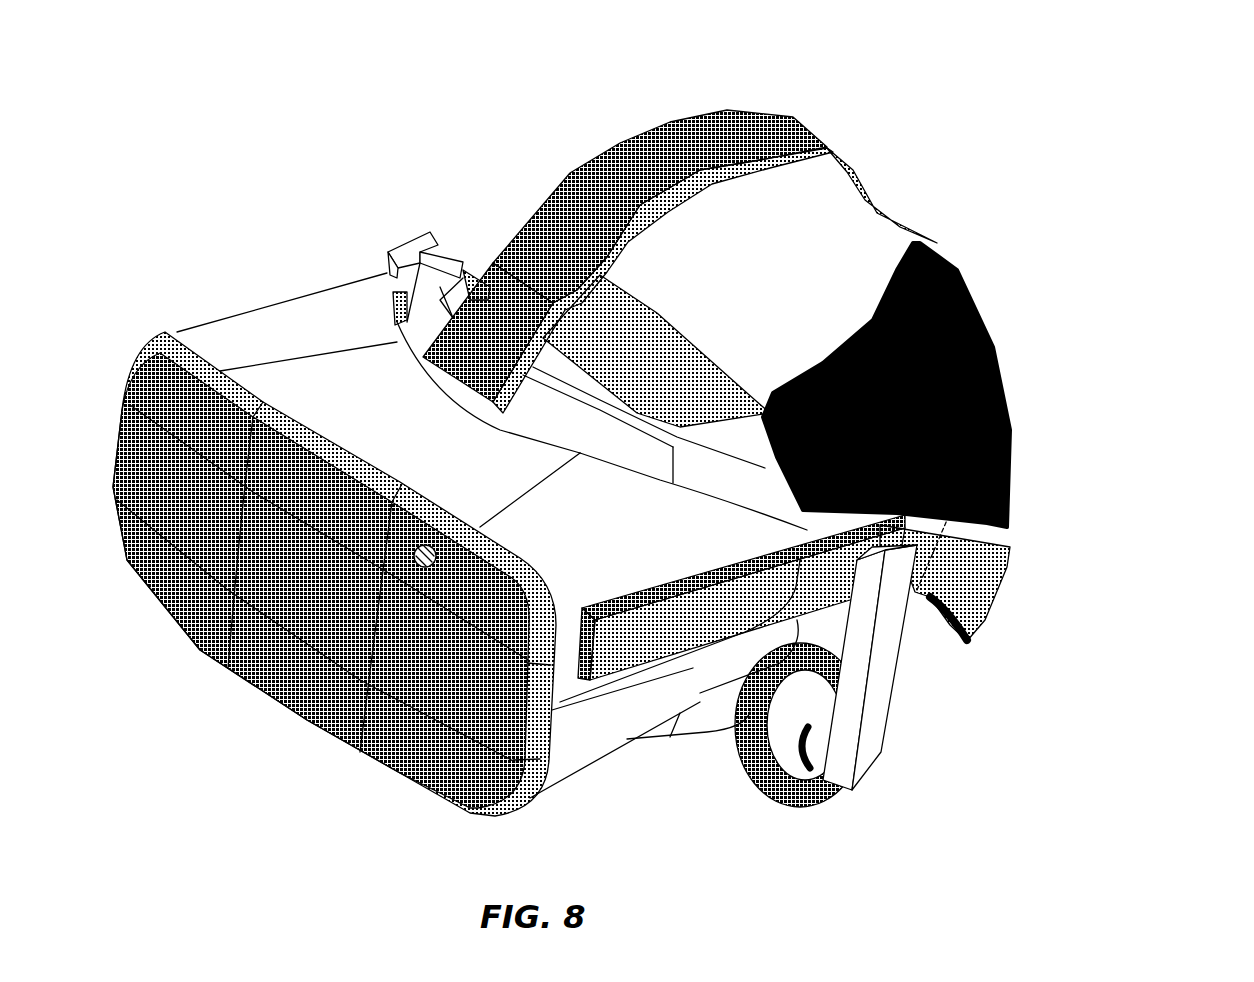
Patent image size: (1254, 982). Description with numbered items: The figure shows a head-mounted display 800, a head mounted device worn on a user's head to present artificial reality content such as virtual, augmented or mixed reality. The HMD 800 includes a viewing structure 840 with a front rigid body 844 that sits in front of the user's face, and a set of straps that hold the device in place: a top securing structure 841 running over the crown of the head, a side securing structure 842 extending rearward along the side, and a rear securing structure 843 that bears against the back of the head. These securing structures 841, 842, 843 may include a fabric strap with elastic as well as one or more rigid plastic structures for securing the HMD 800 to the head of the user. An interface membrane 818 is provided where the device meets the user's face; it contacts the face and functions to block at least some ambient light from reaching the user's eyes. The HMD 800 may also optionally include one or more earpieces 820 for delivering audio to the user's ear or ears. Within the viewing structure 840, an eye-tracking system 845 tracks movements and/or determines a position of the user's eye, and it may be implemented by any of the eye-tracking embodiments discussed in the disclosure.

The head-mounted display 800 is at (1152, 118).
The interface membrane 818 is at (457, 253).
The earpiece 820 is at (893, 773).
The viewing structure 840 is at (355, 334).
The top securing structure 841 is at (788, 122).
The side securing structure 842 is at (667, 313).
The rear securing structure 843 is at (993, 337).
The front rigid body 844 is at (322, 603).
The eye-tracking system 845 is at (428, 546).